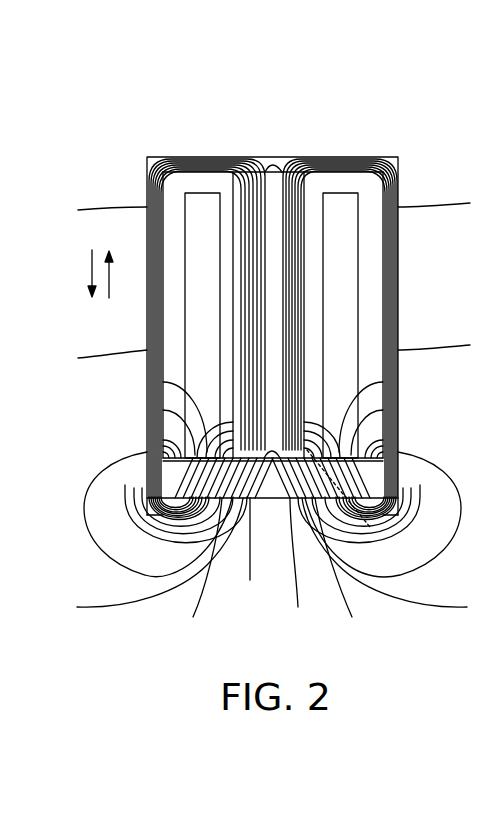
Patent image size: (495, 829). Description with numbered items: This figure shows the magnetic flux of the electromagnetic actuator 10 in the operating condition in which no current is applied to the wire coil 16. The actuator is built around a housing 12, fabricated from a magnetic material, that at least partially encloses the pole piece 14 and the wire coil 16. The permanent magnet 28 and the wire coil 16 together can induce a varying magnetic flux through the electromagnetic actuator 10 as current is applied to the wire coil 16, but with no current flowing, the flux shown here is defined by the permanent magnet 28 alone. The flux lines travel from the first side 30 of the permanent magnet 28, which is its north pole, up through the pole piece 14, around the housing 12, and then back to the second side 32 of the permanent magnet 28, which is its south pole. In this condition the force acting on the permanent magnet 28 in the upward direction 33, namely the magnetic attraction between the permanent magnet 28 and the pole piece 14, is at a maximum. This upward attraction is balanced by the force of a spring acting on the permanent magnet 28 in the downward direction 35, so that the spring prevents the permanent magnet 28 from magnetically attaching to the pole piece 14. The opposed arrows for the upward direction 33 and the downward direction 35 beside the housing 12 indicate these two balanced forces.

The electromagnetic actuator 10 is at (307, 122).
The housing 12 is at (189, 153).
The pole piece 14 is at (272, 185).
The wire coil 16 is at (345, 232).
The permanent magnet 28 is at (272, 483).
The first side 30 is at (250, 552).
The second side 32 is at (299, 565).
The upward direction 33 is at (112, 270).
The downward direction 35 is at (90, 275).